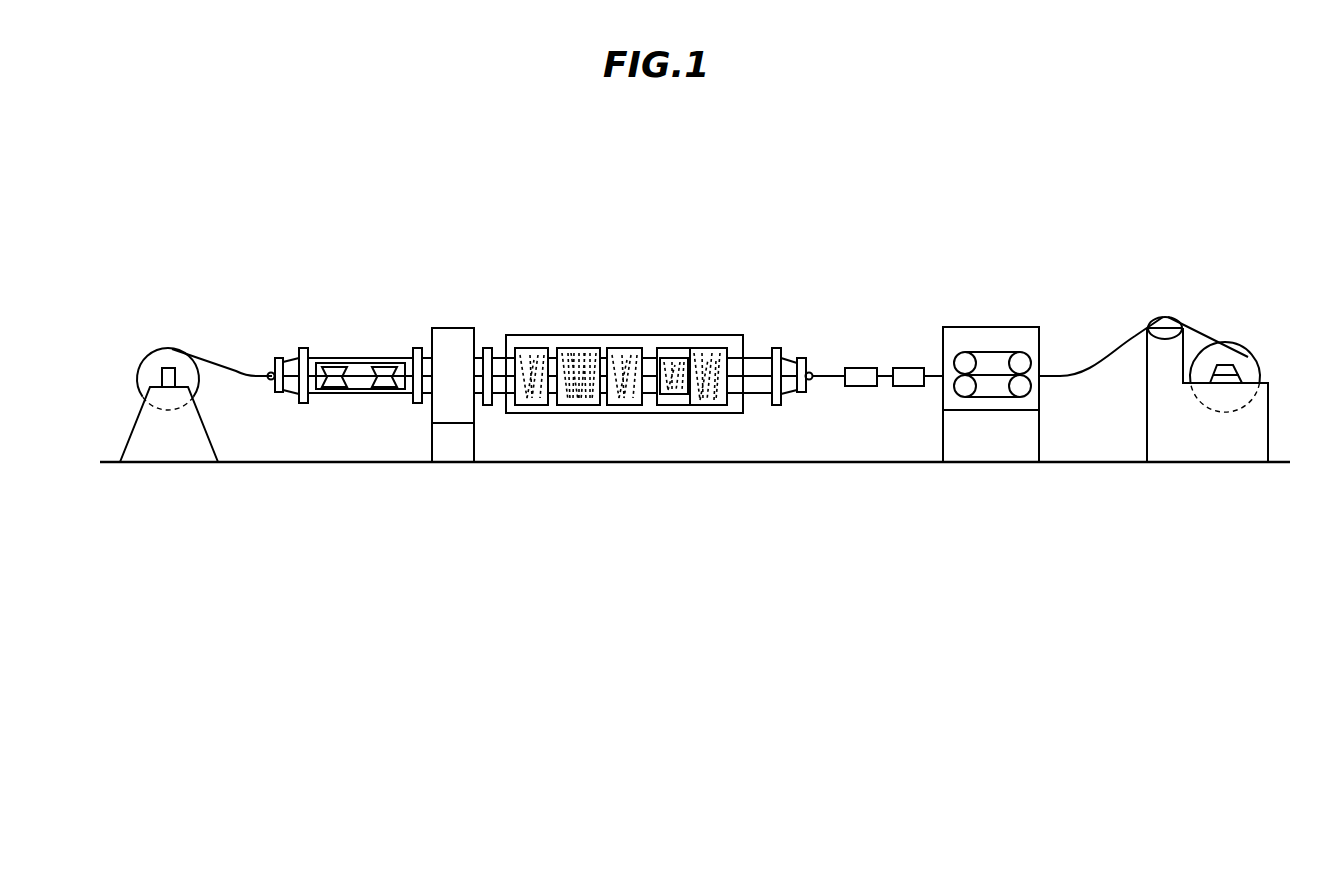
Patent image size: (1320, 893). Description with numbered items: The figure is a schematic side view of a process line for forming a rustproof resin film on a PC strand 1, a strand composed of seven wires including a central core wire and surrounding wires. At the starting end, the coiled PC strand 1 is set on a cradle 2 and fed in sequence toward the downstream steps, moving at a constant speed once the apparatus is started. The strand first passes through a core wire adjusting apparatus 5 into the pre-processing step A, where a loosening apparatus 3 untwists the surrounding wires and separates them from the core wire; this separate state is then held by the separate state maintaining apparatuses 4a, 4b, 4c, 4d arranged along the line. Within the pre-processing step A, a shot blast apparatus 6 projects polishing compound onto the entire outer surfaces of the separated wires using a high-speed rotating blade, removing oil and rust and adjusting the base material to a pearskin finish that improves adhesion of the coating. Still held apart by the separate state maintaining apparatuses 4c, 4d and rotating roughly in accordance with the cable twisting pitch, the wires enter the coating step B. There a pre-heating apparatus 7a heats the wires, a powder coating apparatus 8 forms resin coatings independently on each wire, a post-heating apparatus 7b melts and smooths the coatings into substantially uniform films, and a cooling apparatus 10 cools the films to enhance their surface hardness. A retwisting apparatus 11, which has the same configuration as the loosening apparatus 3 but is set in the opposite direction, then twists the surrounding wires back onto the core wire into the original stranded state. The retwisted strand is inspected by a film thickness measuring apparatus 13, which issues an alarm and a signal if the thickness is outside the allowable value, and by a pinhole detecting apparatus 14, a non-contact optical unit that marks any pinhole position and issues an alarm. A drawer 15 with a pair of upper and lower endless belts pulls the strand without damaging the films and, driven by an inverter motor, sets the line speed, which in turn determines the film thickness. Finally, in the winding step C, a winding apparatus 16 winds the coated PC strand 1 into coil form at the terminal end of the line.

The PC strand 1 is at (247, 378).
The cradle 2 is at (148, 437).
The loosening apparatus 3 is at (278, 395).
The separate state maintaining apparatus 4a is at (303, 405).
The separate state maintaining apparatus 4b is at (416, 405).
The separate state maintaining apparatus 4c is at (487, 407).
The separate state maintaining apparatus 4d is at (777, 407).
The core wire adjusting apparatus 5 is at (358, 395).
The shot blast apparatus 6 is at (454, 413).
The pre-heating apparatus 7a is at (533, 407).
The post-heating apparatus 7b is at (623, 407).
The powder coating apparatus 8 is at (577, 407).
The cooling apparatus 10 is at (673, 407).
The retwisting apparatus 11 is at (801, 394).
The film thickness measuring apparatus 13 is at (855, 380).
The pinhole detecting apparatus 14 is at (905, 380).
The drawer 15 is at (987, 438).
The winding apparatus 16 is at (1195, 437).
The pre-processing step A is at (455, 317).
The coating step B is at (743, 276).
The winding step C is at (1183, 309).